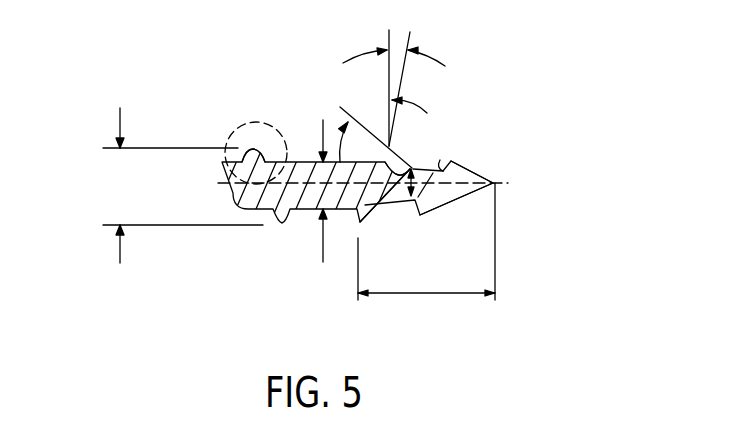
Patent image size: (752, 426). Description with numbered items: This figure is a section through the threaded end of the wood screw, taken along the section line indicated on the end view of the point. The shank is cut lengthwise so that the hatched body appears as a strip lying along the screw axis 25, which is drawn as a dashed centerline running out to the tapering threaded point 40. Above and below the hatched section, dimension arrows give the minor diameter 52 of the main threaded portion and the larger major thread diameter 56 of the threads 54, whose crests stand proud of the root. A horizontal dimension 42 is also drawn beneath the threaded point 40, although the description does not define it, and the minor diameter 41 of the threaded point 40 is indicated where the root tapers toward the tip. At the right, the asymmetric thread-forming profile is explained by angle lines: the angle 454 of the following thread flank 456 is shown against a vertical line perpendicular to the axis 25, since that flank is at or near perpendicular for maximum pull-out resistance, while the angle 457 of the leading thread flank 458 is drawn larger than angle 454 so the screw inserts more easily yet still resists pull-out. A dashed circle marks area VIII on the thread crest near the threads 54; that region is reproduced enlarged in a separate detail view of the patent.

The axis 25 is at (505, 175).
The threaded point 40 is at (392, 202).
The minor diameter of the threaded point 41 is at (386, 160).
The tip length 42 is at (423, 294).
The minor diameter of the main threaded portion 52 is at (323, 243).
The threads 54 is at (250, 162).
The major thread diameter 56 is at (120, 122).
The angle of the following thread flank 454 is at (445, 66).
The following thread flank 456 is at (440, 160).
The angle of the leading thread flank 457 is at (340, 162).
The leading thread flank 458 is at (403, 150).
The area VIII is at (223, 108).